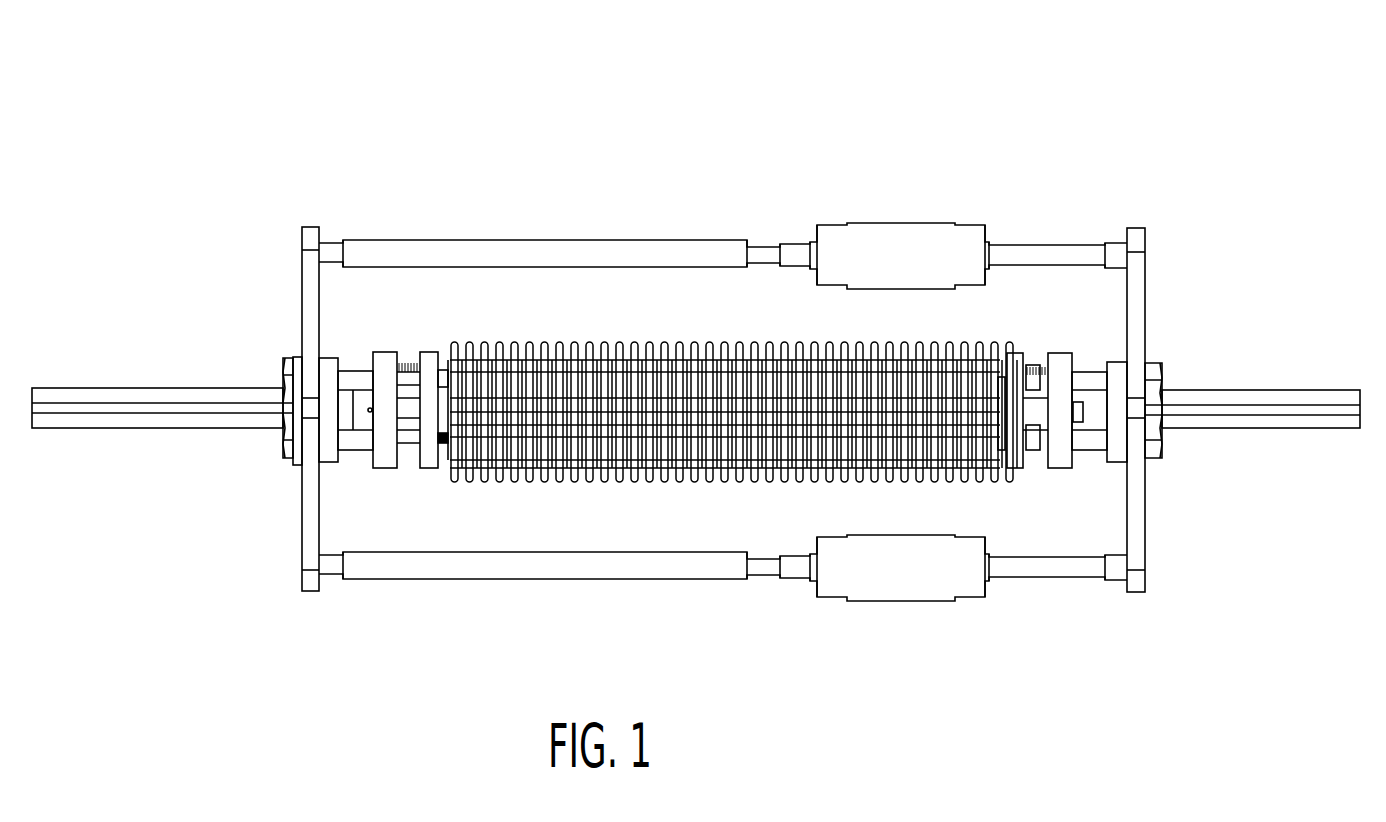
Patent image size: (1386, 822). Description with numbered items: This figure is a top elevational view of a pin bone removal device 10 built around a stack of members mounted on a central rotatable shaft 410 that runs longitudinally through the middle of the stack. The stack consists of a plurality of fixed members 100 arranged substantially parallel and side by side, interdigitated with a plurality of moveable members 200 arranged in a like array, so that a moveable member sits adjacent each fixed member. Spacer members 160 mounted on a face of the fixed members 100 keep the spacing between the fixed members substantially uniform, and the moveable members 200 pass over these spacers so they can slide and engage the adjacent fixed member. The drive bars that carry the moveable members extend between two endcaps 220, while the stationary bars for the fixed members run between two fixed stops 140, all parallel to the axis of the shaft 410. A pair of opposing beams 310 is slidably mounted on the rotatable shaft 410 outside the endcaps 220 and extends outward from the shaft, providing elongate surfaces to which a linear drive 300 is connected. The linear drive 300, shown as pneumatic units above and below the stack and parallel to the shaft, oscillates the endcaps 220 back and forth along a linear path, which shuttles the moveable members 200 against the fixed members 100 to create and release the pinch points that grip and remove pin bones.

The pin bone removal device 10 is at (632, 143).
The fixed members 100 is at (733, 409).
The fixed stops 140 is at (433, 423).
The spacer members 160 is at (687, 438).
The moveable members 200 is at (460, 342).
The endcaps 220 is at (387, 405).
The linear drive 300 is at (908, 255).
The opposing beams 310 is at (310, 312).
The rotatable shaft 410 is at (157, 398).